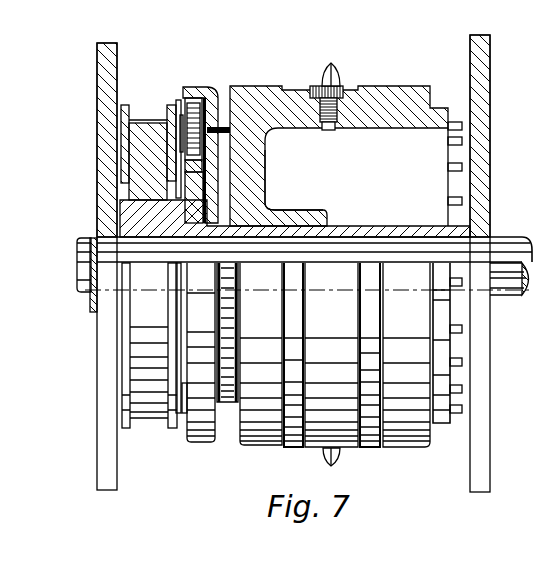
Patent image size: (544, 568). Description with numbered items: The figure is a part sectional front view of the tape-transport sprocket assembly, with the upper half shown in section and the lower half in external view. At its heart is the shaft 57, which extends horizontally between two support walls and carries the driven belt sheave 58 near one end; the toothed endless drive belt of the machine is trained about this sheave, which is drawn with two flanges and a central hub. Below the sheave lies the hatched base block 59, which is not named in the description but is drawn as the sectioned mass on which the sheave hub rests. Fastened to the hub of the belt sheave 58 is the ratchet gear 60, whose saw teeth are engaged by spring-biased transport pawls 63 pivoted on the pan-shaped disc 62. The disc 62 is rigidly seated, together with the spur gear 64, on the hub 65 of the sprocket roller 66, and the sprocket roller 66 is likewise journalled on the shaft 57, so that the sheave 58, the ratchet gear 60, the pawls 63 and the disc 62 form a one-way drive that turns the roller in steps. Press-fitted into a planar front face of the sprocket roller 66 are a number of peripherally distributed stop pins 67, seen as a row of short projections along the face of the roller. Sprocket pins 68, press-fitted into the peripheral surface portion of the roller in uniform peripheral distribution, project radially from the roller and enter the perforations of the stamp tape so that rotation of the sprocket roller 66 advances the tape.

The shaft 57 is at (77, 280).
The driven belt sheave 58 is at (147, 122).
The base block 59 is at (152, 225).
The ratchet gear 60 is at (192, 205).
The pan-shaped disc 62 is at (216, 91).
The transport pawls 63 is at (192, 107).
The spur gear 64 is at (227, 403).
The hub 65 is at (275, 207).
The sprocket roller 66 is at (405, 93).
The stop pins 67 is at (457, 122).
The sprocket pins 68 is at (331, 68).